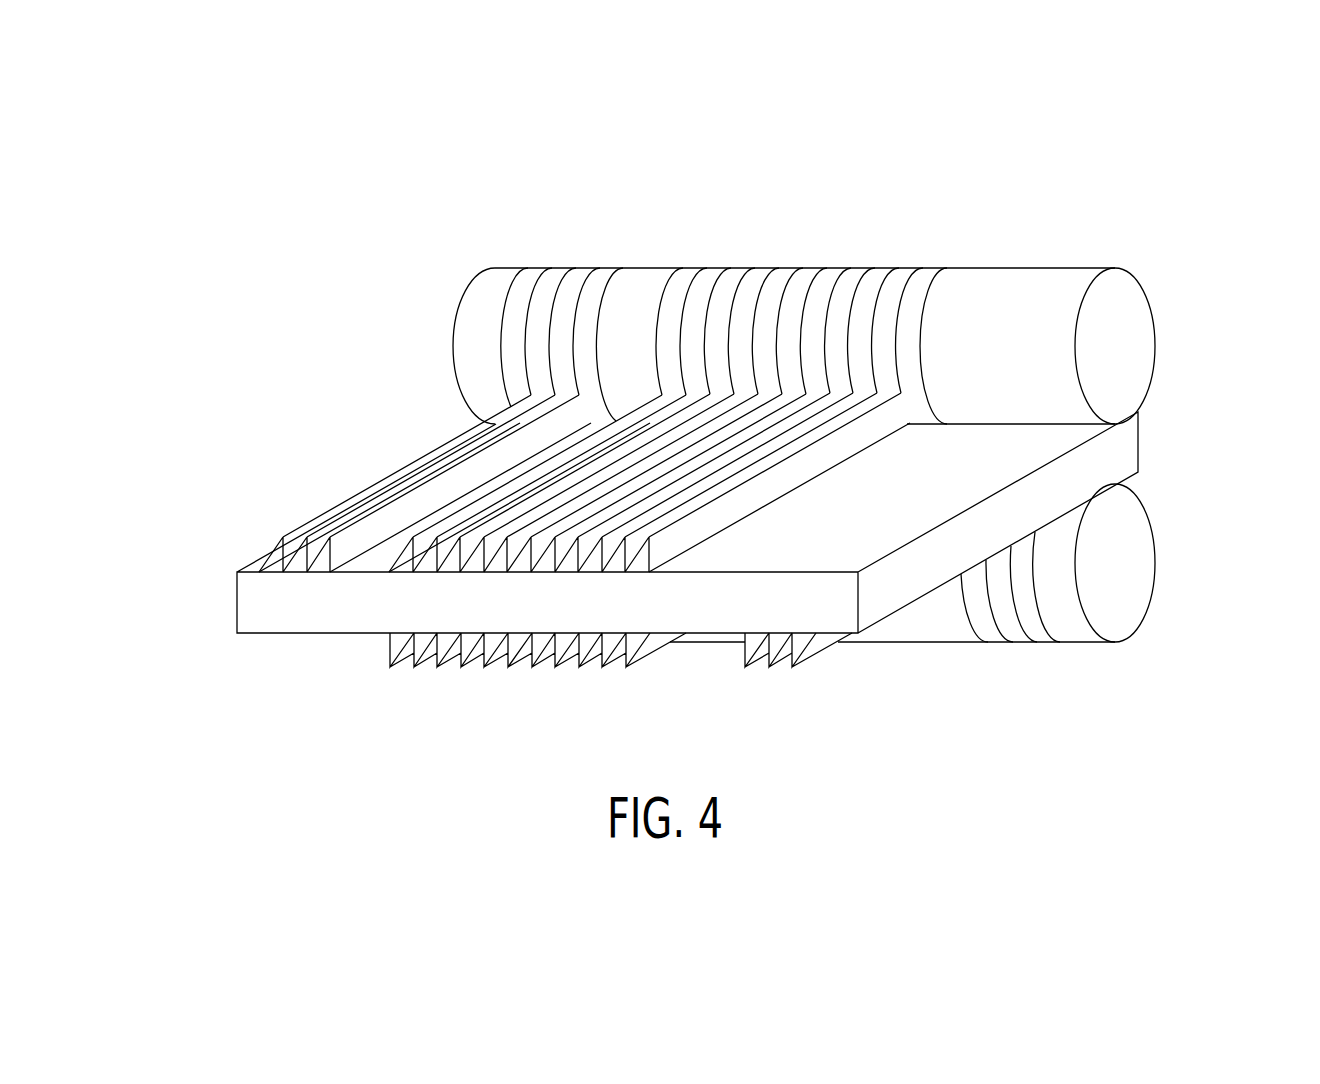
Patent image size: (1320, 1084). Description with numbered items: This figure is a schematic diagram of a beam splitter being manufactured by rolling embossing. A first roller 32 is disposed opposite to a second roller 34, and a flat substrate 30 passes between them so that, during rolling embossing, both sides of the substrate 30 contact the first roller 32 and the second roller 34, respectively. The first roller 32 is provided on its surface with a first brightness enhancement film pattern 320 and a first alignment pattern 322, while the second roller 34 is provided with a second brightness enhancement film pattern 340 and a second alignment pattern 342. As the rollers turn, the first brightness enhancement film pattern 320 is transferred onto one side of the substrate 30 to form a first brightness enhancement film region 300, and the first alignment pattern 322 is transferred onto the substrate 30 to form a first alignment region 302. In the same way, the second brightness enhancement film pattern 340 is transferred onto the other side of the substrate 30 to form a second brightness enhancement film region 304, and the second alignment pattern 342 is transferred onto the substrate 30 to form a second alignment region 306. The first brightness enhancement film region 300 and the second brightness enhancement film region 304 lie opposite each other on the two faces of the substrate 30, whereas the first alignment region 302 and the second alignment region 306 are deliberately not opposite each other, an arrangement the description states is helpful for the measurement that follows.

The substrate 30 is at (687, 580).
The first brightness enhancement film region 300 is at (405, 565).
The first alignment region 302 is at (272, 557).
The second brightness enhancement film region 304 is at (475, 668).
The second alignment region 306 is at (778, 668).
The first roller 32 is at (860, 274).
The first brightness enhancement film pattern 320 is at (803, 284).
The first alignment pattern 322 is at (566, 278).
The second roller 34 is at (967, 614).
The second brightness enhancement film pattern 340 is at (880, 640).
The second alignment pattern 342 is at (1013, 642).